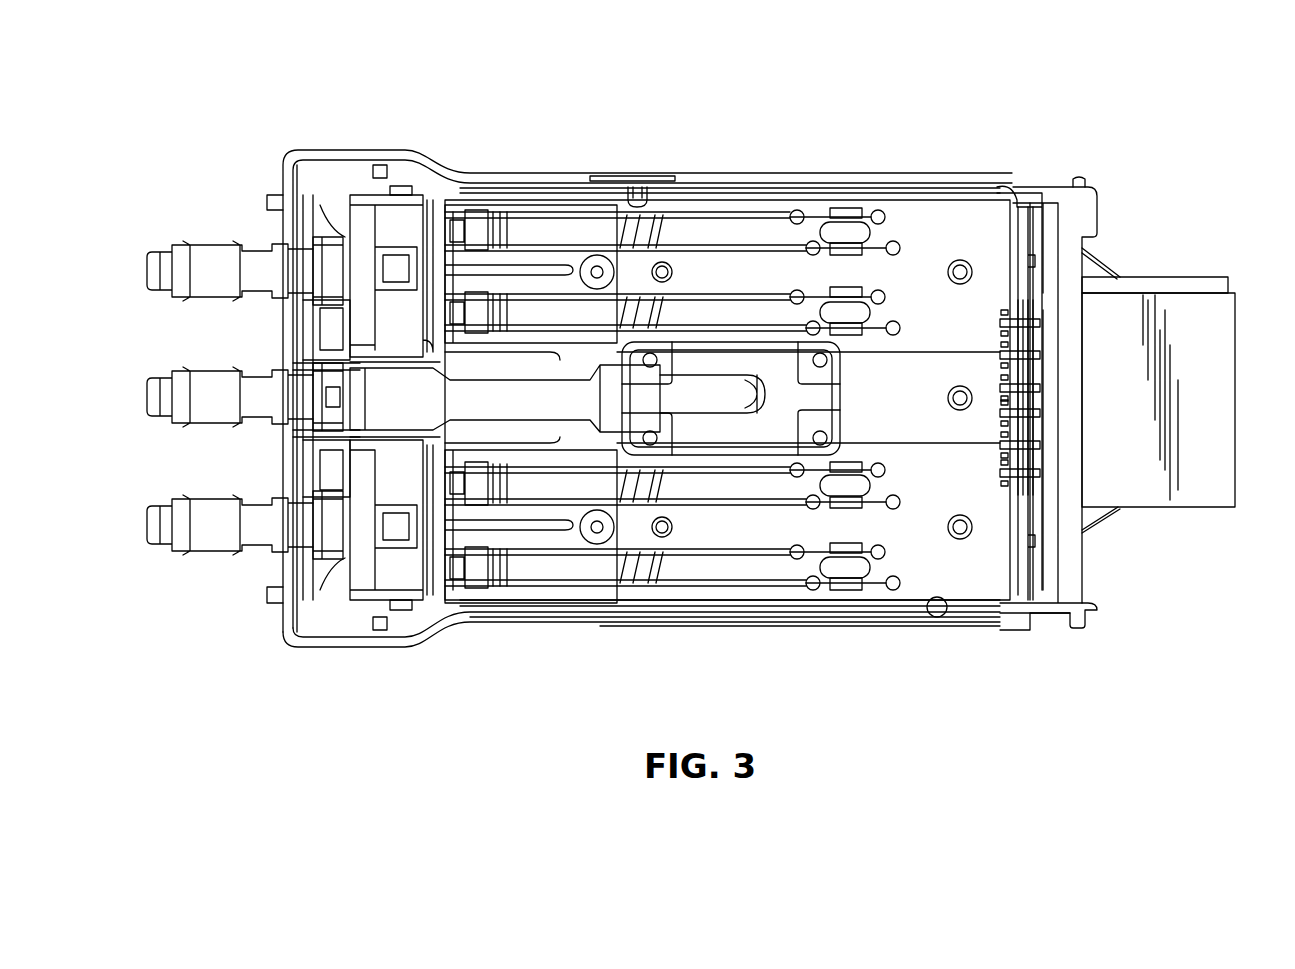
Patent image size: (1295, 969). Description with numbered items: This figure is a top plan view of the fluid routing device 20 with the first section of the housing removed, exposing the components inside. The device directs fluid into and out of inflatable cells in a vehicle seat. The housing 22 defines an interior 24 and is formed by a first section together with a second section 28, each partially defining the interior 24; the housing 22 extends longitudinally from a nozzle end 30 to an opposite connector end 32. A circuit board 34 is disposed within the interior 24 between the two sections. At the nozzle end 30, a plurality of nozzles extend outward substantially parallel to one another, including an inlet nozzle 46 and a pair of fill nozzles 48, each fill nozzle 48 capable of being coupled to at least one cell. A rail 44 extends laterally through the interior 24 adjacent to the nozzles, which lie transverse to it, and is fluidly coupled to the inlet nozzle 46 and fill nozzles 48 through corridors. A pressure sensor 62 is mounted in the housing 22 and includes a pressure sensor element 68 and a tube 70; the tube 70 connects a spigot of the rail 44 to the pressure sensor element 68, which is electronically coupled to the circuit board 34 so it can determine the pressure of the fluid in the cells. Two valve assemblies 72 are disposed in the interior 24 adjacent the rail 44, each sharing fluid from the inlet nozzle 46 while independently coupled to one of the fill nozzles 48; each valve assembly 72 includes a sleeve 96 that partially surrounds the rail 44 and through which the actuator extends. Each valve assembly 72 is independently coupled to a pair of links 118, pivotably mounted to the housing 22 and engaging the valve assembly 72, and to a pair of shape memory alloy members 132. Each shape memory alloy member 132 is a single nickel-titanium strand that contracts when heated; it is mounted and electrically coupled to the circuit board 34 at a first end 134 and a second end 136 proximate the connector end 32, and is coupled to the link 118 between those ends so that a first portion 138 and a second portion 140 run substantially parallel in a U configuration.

The fluid routing device 20 is at (1056, 106).
The housing 22 is at (1040, 188).
The interior 24 is at (935, 606).
The second section 28 is at (870, 625).
The nozzle end 30 is at (185, 540).
The connector end 32 is at (1238, 310).
The circuit board 34 is at (975, 200).
The rail 44 is at (305, 468).
The inlet nozzle 46 is at (190, 390).
The fill nozzle 48 is at (218, 262).
The pressure sensor 62 is at (850, 382).
The pressure sensor element 68 is at (785, 413).
The tube 70 is at (545, 392).
The valve assembly 72 is at (399, 176).
The sleeve 96 is at (370, 208).
The link 118 is at (488, 305).
The shape memory alloy member 132 is at (744, 208).
The first end 134 is at (846, 210).
The second end 136 is at (855, 258).
The first portion 138 is at (705, 248).
The second portion 140 is at (655, 205).